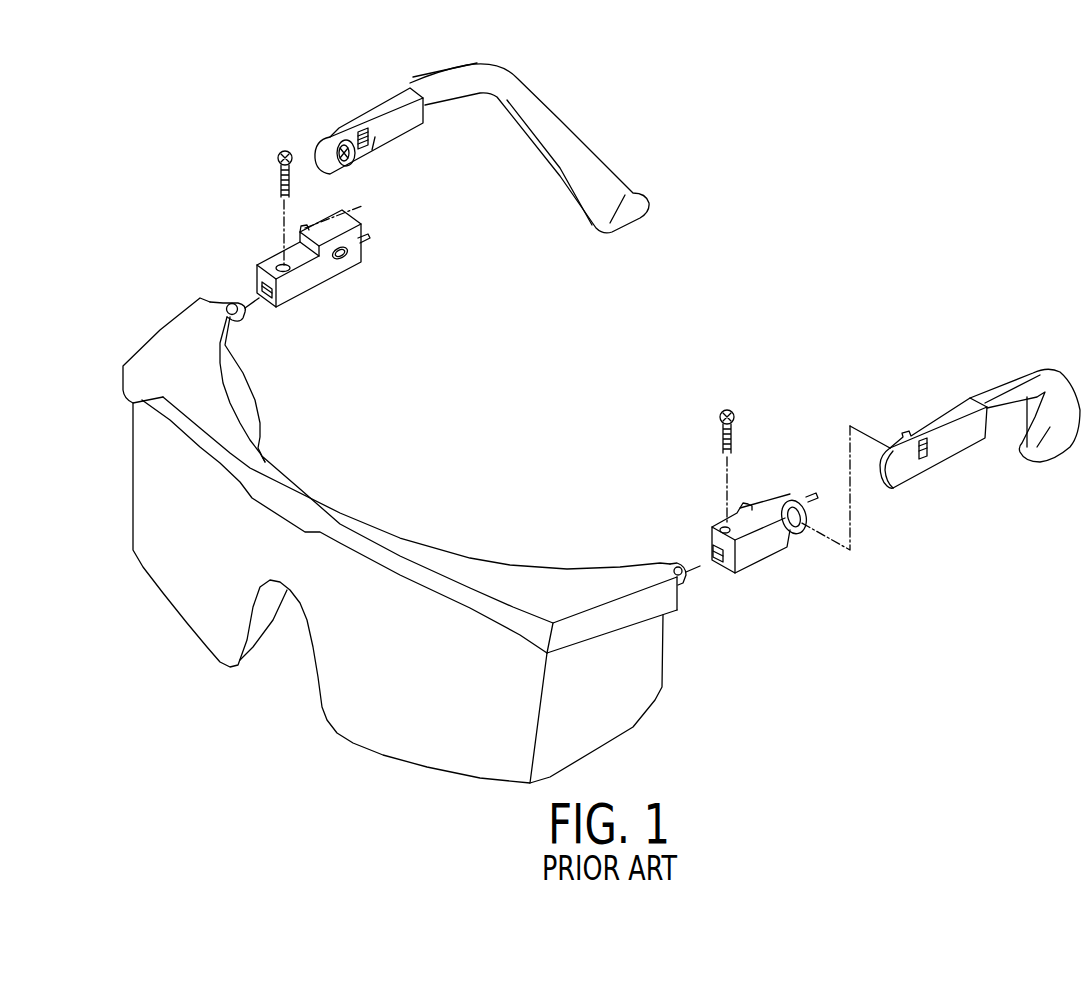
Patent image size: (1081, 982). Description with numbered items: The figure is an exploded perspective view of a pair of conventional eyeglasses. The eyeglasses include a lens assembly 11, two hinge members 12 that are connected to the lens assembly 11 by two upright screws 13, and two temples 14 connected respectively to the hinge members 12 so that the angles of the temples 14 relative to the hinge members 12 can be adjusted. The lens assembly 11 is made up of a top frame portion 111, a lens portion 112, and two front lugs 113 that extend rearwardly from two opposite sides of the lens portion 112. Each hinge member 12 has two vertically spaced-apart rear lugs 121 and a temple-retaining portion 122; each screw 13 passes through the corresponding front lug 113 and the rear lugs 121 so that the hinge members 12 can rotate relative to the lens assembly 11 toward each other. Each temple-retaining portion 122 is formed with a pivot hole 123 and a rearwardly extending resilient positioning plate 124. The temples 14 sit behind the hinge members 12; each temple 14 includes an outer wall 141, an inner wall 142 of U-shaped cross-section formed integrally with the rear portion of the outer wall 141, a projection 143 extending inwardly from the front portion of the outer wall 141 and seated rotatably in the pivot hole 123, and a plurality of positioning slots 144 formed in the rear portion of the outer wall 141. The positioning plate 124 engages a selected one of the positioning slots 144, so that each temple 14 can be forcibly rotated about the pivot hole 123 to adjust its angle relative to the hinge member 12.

The lens assembly 11 is at (372, 751).
The top frame portion 111 is at (503, 578).
The lens portion 112 is at (470, 750).
The front lug 113 is at (228, 302).
The hinge member 12 is at (274, 257).
The rear lug 121 is at (300, 296).
The temple-retaining portion 122 is at (362, 206).
The pivot hole 123 is at (347, 259).
The resilient positioning plate 124 is at (362, 244).
The upright screw 13 is at (286, 155).
The temple 14 is at (458, 77).
The outer wall 141 is at (335, 131).
The inner wall 142 is at (410, 127).
The projection 143 is at (341, 134).
The positioning slot 144 is at (377, 143).